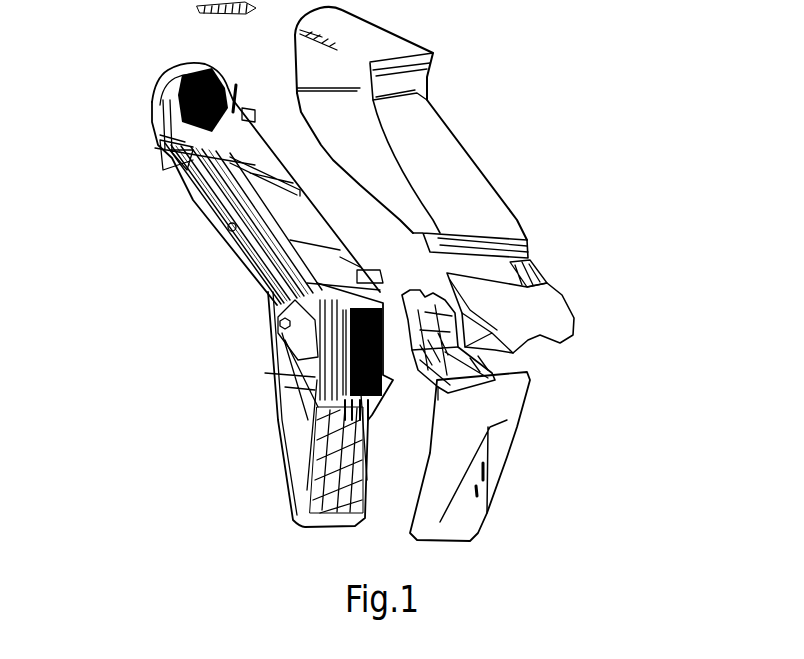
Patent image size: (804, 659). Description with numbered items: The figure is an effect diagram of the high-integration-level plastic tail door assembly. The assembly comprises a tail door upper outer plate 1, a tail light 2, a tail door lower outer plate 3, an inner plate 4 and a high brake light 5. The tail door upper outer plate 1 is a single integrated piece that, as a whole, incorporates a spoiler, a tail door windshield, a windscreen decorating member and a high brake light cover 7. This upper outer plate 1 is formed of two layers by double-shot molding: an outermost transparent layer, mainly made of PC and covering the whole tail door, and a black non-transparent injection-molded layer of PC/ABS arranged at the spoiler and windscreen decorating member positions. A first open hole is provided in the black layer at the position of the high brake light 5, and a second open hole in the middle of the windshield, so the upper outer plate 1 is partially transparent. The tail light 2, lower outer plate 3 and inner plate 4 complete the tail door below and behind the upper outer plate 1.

The tail door upper outer plate 1 is at (452, 143).
The tail light 2 is at (547, 318).
The tail door lower outer plate 3 is at (505, 453).
The inner plate 4 is at (307, 338).
The high brake light 5 is at (240, 17).
The high brake light cover 7 is at (430, 66).